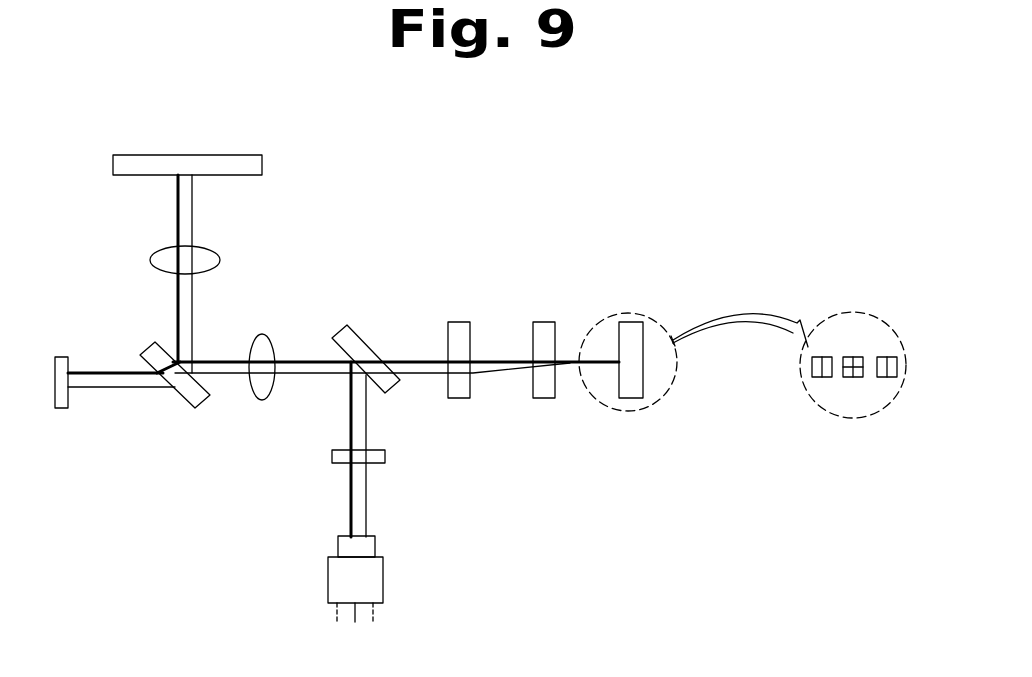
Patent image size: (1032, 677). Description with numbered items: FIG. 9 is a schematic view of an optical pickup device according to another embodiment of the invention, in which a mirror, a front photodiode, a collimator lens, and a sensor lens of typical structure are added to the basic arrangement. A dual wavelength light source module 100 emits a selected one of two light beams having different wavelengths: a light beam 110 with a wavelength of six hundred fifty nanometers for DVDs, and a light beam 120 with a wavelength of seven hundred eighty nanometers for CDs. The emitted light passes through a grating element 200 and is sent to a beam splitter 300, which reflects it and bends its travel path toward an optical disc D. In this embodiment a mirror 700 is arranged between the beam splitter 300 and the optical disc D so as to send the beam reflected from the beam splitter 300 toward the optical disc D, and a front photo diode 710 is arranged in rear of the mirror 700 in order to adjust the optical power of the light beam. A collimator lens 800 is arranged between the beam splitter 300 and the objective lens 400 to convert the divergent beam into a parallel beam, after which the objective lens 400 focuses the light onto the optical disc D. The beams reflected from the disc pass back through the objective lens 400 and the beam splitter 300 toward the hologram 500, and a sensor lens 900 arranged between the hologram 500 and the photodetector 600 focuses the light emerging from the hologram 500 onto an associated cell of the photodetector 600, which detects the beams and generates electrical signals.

The optical disc D is at (262, 163).
The dual wavelength light source module 100 is at (383, 583).
The light beam 110 is at (348, 510).
The light beam 120 is at (366, 510).
The lens 200 is at (385, 458).
The beam splitter 300 is at (358, 330).
The objective lens 400 is at (214, 252).
The hologram 500 is at (463, 322).
The photodetector 600 is at (632, 322).
The mirror 700 is at (177, 392).
The front photo diode 710 is at (62, 355).
The collimator lens 800 is at (263, 332).
The sensor lens 900 is at (547, 322).